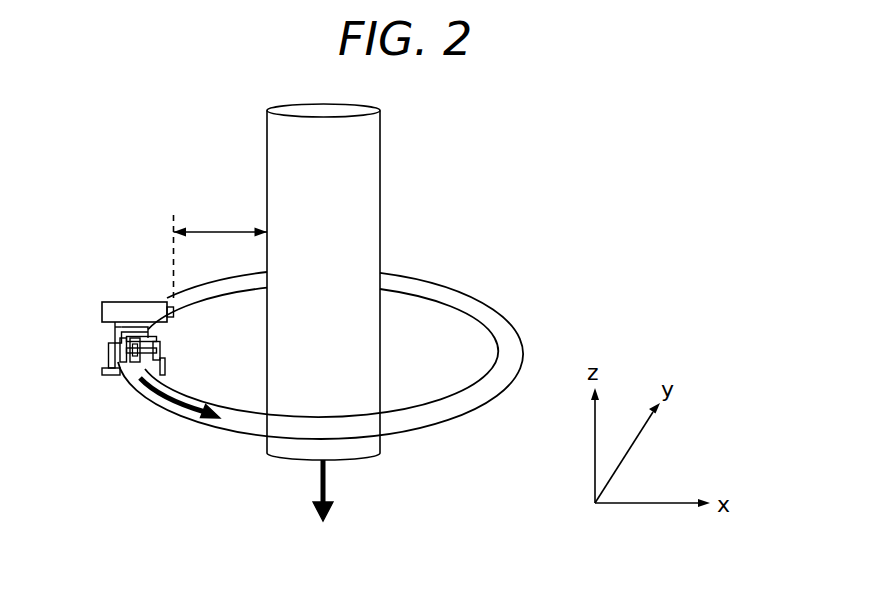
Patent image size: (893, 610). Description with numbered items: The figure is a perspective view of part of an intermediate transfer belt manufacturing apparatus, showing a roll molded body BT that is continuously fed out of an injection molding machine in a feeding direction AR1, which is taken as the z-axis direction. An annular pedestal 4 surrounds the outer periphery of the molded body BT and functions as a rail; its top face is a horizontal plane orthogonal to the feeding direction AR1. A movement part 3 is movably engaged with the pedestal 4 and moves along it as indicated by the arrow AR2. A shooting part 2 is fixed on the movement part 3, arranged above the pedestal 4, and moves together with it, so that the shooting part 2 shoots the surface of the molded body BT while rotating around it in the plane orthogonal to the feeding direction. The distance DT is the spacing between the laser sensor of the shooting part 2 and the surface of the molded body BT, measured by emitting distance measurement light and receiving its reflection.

The molded body BT is at (290, 139).
The distance DT is at (220, 230).
The shooting part 2 is at (132, 312).
The movement part 3 is at (117, 352).
The pedestal 4 is at (252, 421).
The feeding direction AR1 is at (334, 484).
The arrow indicating movement direction AR2 is at (190, 398).